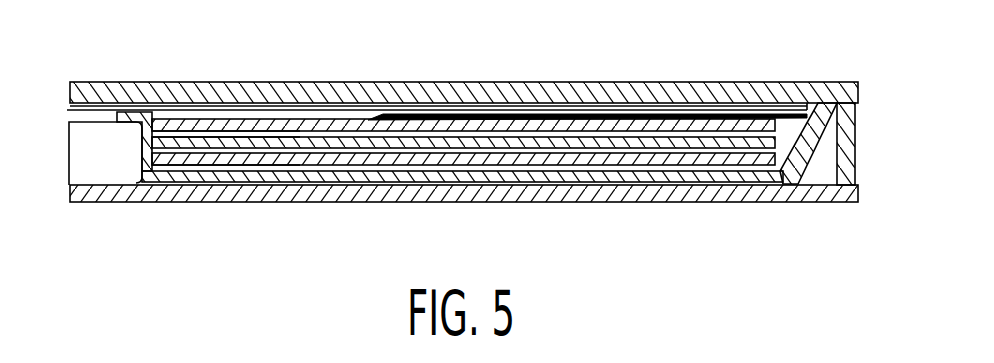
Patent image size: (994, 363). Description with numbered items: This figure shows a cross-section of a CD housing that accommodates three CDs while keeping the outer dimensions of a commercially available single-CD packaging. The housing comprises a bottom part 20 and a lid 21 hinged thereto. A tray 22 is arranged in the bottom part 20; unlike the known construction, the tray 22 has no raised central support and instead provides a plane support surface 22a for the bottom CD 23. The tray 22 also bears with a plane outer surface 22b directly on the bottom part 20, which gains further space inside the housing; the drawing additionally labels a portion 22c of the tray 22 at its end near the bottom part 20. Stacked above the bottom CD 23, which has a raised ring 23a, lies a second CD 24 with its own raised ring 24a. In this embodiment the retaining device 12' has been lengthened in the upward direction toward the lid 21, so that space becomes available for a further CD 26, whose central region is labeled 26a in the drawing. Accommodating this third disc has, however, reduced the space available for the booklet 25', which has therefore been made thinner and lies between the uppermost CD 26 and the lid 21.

The retaining device 12' is at (105, 193).
The bottom part 20 is at (813, 193).
The lid 21 is at (620, 95).
The tray 22 is at (477, 183).
The plane support surface 22a is at (452, 167).
The plane outer surface 22b is at (197, 183).
The holder inclined portion 22c is at (780, 172).
The bottom CD 23 is at (312, 158).
The raised ring 23a is at (280, 167).
The CD 24 is at (388, 142).
The raised ring 24a is at (277, 147).
The booklet 25' is at (437, 73).
The further CD 26 is at (513, 126).
The upper layer end 26a is at (273, 132).